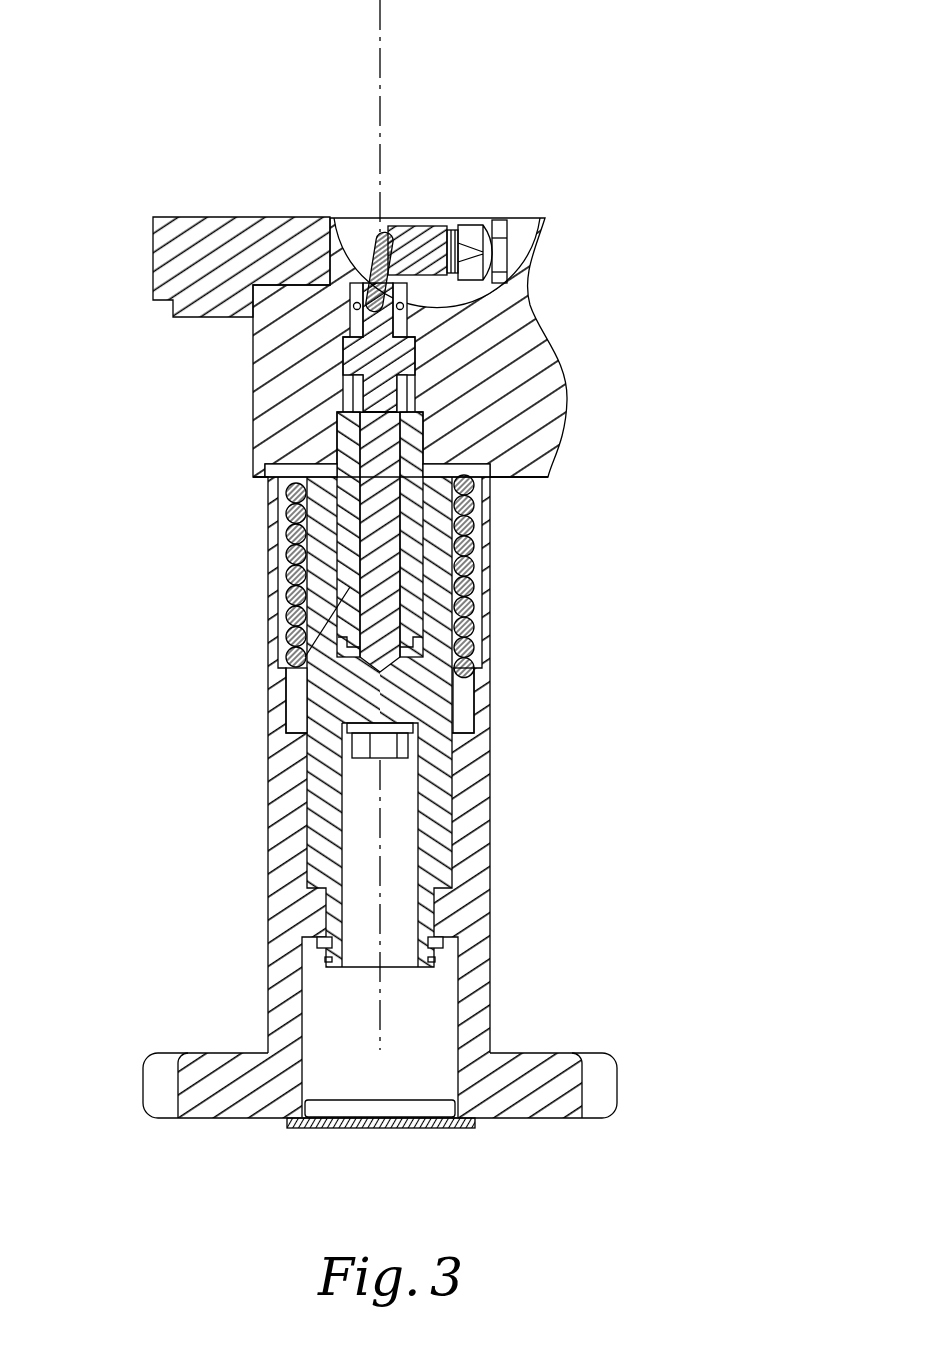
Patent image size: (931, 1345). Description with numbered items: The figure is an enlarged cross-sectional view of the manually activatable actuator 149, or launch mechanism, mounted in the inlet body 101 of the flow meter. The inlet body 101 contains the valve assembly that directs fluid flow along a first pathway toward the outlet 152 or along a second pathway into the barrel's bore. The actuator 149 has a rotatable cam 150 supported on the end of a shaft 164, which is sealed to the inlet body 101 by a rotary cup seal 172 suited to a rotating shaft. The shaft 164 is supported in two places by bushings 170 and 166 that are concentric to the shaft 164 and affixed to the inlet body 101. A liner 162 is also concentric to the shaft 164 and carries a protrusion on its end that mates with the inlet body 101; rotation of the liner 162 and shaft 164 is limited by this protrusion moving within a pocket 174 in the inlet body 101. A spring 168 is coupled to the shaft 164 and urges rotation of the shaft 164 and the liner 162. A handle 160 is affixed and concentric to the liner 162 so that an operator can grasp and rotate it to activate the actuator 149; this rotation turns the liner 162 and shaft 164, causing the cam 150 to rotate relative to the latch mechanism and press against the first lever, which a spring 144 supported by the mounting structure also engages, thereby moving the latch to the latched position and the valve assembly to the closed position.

The inlet body 101 is at (552, 365).
The spring 144 is at (428, 230).
The actuator 149 is at (508, 686).
The cam 150 is at (364, 242).
The outlet 152 is at (152, 258).
The handle 160 is at (225, 1113).
The liner 162 is at (310, 858).
The shaft 164 is at (356, 658).
The bushing 166 is at (284, 677).
The spring 168 is at (286, 556).
The bushing 170 is at (345, 361).
The rotary cup seal 172 is at (352, 328).
The pocket 174 is at (282, 479).